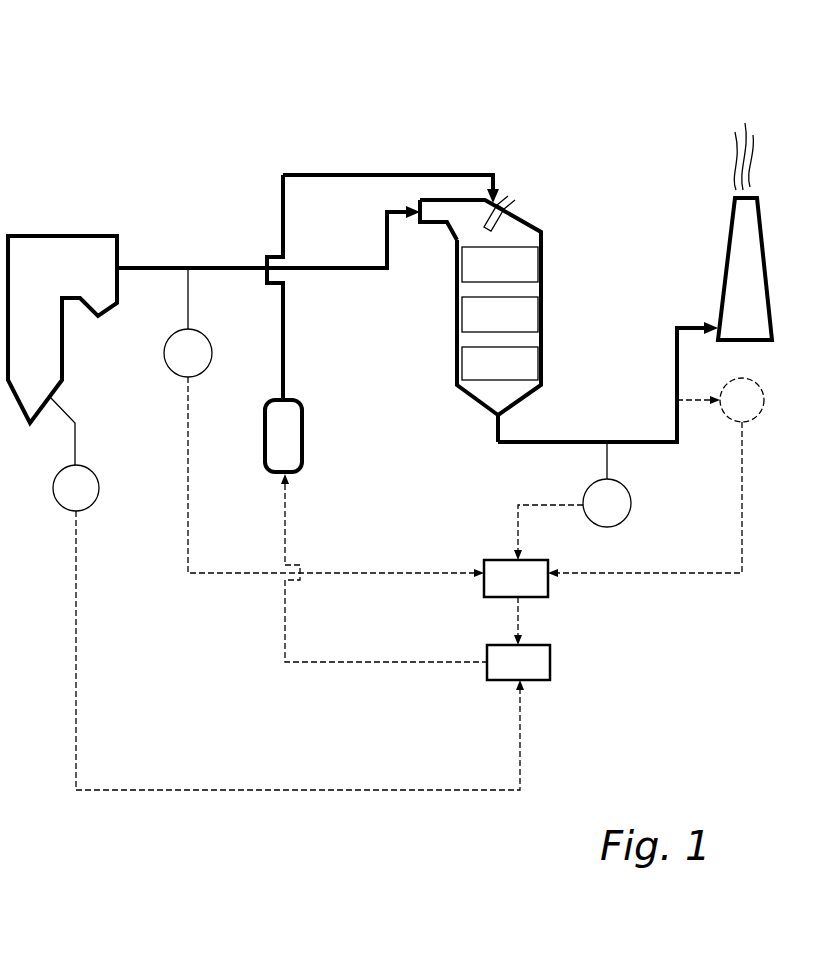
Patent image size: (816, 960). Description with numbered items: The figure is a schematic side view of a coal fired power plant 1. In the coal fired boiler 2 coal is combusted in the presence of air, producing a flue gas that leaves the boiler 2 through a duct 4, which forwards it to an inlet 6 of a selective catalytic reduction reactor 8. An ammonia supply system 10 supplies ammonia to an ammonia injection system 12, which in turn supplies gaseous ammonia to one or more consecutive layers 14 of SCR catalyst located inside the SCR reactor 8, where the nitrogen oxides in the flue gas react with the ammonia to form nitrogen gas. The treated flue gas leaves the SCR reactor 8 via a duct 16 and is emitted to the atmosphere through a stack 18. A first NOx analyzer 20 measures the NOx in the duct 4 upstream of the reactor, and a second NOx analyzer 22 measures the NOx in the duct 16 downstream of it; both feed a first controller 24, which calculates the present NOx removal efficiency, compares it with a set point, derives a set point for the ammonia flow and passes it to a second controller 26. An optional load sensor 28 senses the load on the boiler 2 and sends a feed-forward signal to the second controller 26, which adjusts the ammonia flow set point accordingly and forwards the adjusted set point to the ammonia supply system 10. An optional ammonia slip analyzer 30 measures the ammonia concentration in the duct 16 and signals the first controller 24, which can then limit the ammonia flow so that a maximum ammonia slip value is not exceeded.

The power plant 1 is at (141, 95).
The coal fired boiler 2 is at (65, 236).
The duct 4 is at (150, 268).
The inlet 6 is at (435, 223).
The selective catalytic reduction (SCR) reactor 8 is at (527, 220).
The ammonia supply system 10 is at (303, 435).
The ammonia injection system 12 is at (506, 204).
The layers of SCR-catalyst 14 is at (550, 360).
The duct 16 is at (588, 442).
The stack 18 is at (730, 238).
The first NOx analyzer 20 is at (165, 366).
The second NOx analyzer 22 is at (628, 517).
The first controller 24 is at (498, 560).
The second controller 26 is at (550, 660).
The load sensor 28 is at (100, 497).
The ammonia slip analyzer 30 is at (765, 392).